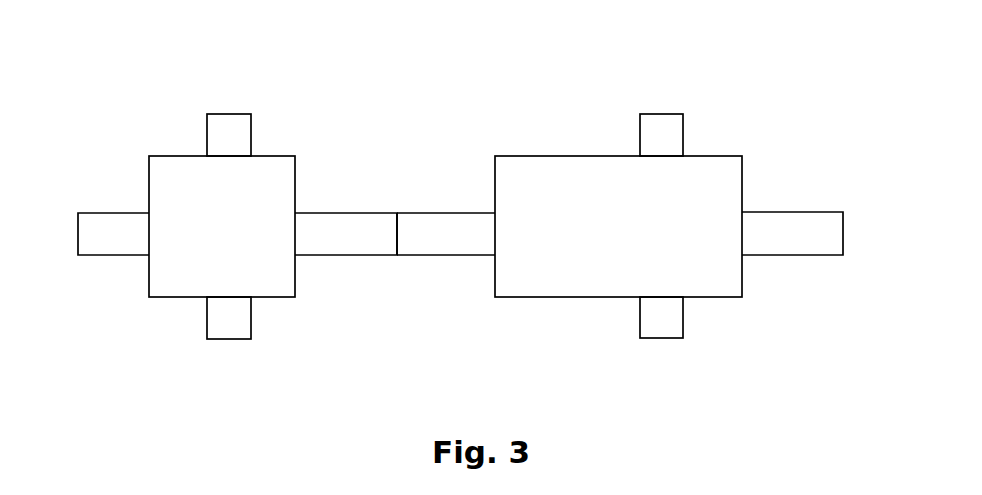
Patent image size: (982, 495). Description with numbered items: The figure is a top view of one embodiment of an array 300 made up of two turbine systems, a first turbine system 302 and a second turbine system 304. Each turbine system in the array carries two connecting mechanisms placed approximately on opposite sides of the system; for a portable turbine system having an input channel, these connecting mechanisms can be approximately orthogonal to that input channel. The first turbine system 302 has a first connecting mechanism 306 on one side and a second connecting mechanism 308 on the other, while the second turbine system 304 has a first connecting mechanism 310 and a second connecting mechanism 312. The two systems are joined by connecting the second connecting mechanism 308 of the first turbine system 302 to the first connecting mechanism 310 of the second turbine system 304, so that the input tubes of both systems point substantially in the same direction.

The array with two turbine systems 300 is at (530, 72).
The first turbine system 302 is at (235, 99).
The second turbine system 304 is at (697, 133).
The first connecting mechanism 306 is at (92, 255).
The second connecting mechanism 308 is at (358, 255).
The first connecting mechanism 310 is at (422, 211).
The second connecting mechanism 312 is at (800, 208).